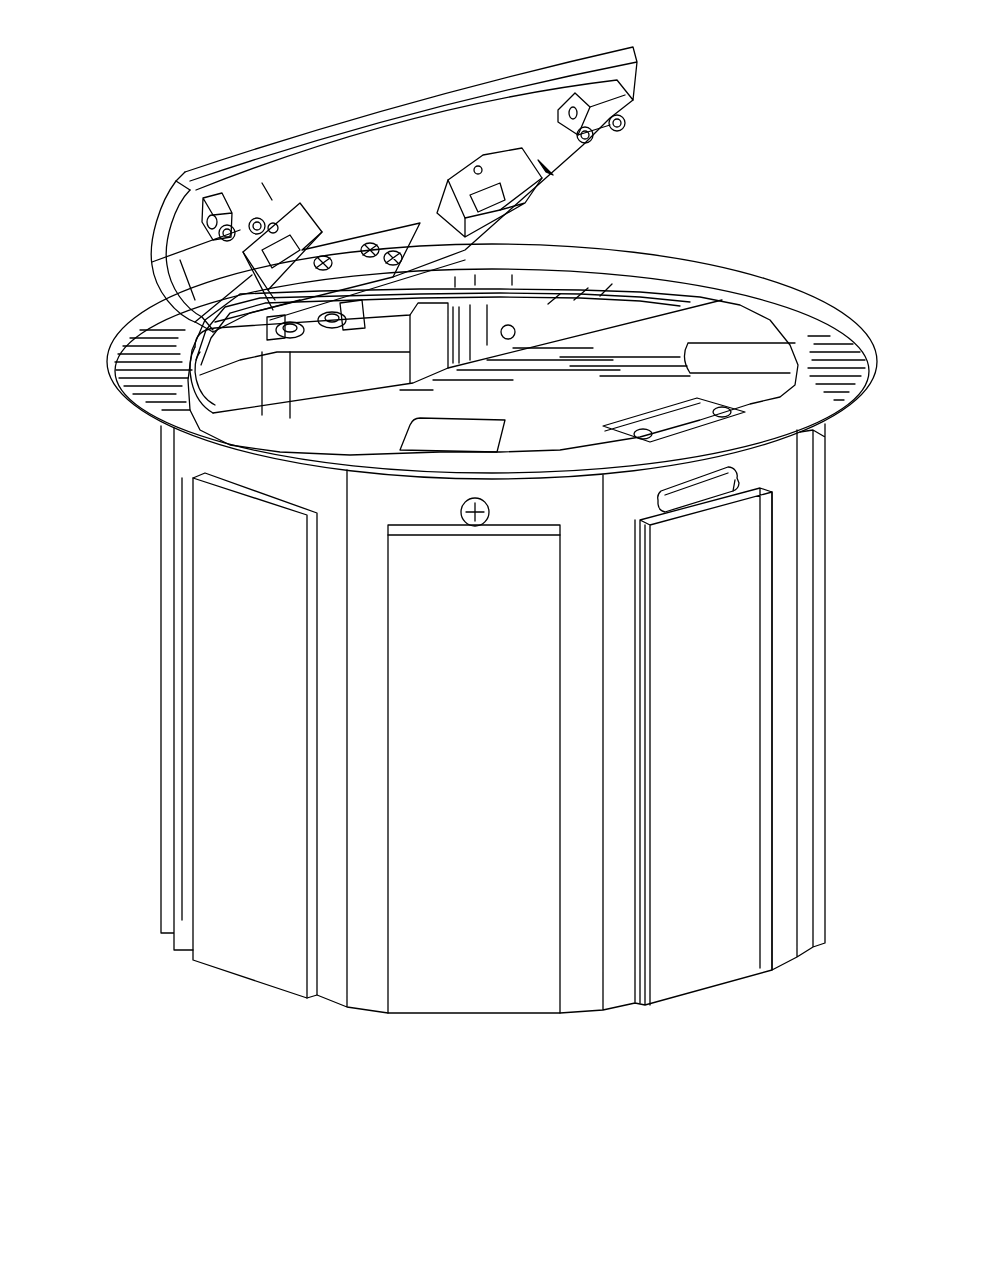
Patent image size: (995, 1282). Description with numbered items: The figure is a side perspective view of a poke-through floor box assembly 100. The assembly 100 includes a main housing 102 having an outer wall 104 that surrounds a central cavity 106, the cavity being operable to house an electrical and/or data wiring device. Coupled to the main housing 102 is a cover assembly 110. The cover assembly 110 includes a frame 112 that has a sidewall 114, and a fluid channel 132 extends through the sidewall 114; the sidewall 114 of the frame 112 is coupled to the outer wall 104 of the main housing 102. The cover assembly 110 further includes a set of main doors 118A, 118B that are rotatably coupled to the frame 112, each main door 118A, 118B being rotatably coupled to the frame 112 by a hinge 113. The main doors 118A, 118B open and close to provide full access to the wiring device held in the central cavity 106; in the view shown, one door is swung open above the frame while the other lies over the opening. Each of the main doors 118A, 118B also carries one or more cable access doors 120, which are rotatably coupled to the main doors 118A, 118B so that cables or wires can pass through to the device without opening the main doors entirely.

The poke-through floor box assembly 100 is at (838, 90).
The main housing 102 is at (468, 975).
The outer wall 104 is at (808, 701).
The central cavity 106 is at (562, 322).
The cover assembly 110 is at (126, 290).
The frame 112 is at (852, 348).
The hinge 113 is at (347, 250).
The sidewall 114 is at (242, 383).
The main door 118A is at (178, 210).
The main door 118B is at (620, 352).
The cable access door 120 is at (186, 290).
The fluid channel 132 is at (702, 480).